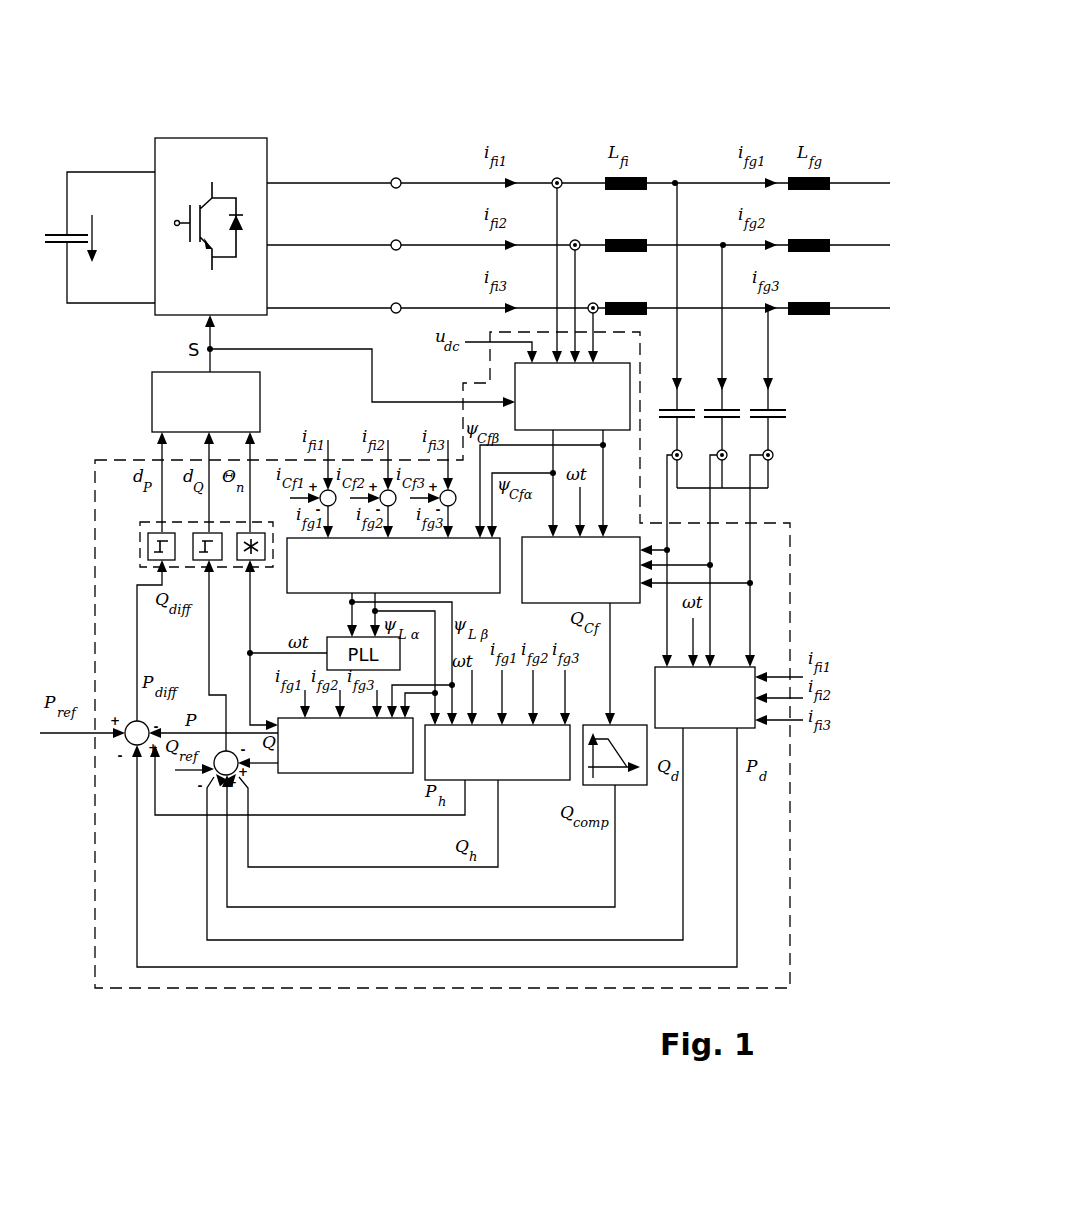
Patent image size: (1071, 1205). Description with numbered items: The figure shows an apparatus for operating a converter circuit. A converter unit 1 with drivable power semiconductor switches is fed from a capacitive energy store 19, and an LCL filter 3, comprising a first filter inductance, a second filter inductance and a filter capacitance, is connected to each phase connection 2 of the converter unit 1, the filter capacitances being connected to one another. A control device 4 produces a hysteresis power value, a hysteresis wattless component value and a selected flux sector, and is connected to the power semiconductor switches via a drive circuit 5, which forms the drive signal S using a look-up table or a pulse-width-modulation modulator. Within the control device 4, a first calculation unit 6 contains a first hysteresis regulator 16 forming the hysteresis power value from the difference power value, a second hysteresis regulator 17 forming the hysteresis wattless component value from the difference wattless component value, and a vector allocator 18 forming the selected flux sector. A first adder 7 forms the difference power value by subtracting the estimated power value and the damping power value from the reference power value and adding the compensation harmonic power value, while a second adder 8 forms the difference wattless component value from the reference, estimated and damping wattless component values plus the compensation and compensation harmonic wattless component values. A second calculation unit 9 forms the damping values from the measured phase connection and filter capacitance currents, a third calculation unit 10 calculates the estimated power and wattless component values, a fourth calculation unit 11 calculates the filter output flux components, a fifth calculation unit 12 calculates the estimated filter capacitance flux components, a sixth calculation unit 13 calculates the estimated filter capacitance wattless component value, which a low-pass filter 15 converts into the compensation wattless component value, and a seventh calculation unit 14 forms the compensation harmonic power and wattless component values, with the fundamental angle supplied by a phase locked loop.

The converter unit 1 is at (227, 137).
The phase connection 2 is at (394, 305).
The LCL filter 3 is at (662, 222).
The control device 4 is at (790, 523).
The drive circuit 5 is at (206, 402).
The first calculation unit 6 is at (141, 458).
The first adder 7 is at (131, 722).
The second adder 8 is at (217, 752).
The second calculation unit 9 is at (705, 697).
The third calculation unit 10 is at (345, 745).
The fourth calculation unit 11 is at (393, 565).
The fifth calculation unit 12 is at (572, 396).
The sixth calculation unit 13 is at (581, 570).
The seventh calculation unit 14 is at (497, 752).
The low-pass filter 15 is at (655, 727).
The first hysteresis regulator 16 is at (148, 530).
The second hysteresis regulator 17 is at (191, 528).
The vector allocator 18 is at (138, 553).
The capacitive energy store 19 is at (53, 218).